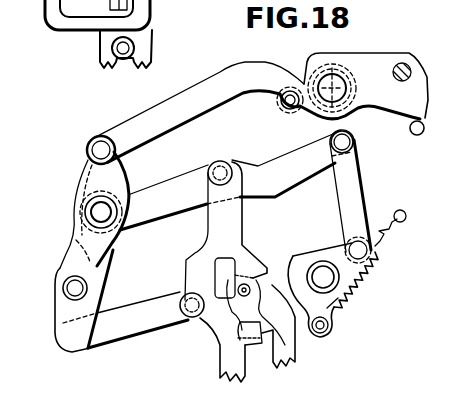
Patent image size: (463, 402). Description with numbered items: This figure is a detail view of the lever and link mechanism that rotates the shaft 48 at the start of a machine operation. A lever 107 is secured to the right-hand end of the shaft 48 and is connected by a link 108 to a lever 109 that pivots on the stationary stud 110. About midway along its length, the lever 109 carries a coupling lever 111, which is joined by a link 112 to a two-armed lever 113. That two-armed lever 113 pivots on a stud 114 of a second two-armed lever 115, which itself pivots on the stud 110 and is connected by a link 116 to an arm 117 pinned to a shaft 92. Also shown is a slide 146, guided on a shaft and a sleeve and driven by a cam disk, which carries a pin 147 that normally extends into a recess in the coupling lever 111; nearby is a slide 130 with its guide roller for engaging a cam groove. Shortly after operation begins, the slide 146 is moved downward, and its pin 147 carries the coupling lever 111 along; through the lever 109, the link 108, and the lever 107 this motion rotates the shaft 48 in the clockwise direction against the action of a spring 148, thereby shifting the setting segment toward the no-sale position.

The slide 130 is at (143, 33).
The shaft 92 is at (325, 80).
The arm 117 is at (372, 62).
The link 116 is at (157, 108).
The lever 109 is at (258, 167).
The link 108 is at (359, 167).
The two-armed lever 115 is at (97, 179).
The stationary stud 110 is at (91, 211).
The coupling lever 111 is at (205, 233).
The lever 107 is at (320, 253).
The shaft 48 is at (318, 270).
The spring 148 is at (381, 243).
The stud 114 is at (66, 285).
The two-armed lever 113 is at (57, 313).
The link 112 is at (153, 303).
The pin 147 is at (251, 288).
The slide 146 is at (222, 356).